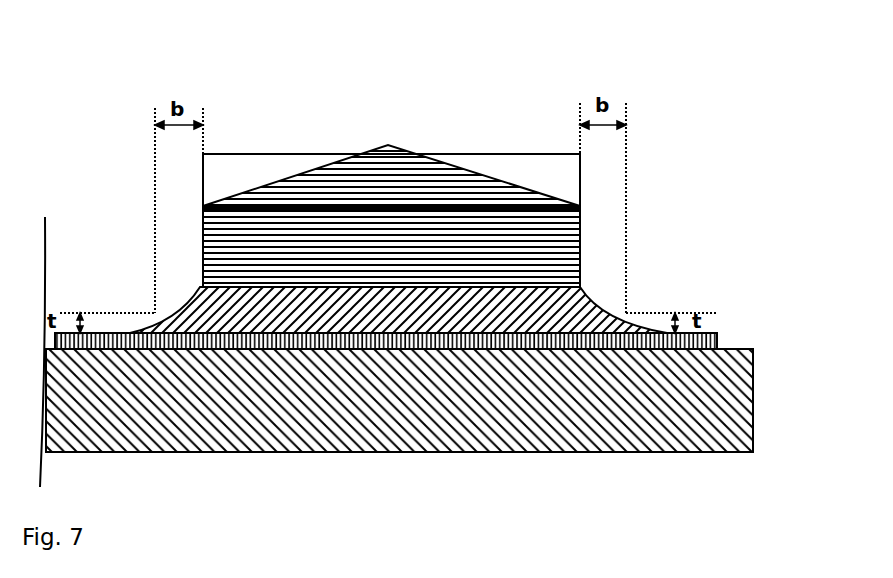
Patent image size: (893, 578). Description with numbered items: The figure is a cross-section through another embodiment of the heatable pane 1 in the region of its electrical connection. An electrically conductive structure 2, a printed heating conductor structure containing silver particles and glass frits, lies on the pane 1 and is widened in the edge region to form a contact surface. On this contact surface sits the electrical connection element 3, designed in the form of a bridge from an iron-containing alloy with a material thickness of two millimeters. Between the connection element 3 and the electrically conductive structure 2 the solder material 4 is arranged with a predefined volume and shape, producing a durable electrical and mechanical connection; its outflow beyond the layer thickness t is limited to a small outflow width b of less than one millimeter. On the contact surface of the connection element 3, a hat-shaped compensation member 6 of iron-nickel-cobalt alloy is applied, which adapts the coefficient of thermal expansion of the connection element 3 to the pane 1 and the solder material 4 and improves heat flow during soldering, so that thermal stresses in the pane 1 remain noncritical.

The pane 1 is at (723, 395).
The electrically conductive structure 2 is at (705, 338).
The electrical connection element 3 is at (548, 262).
The solder material 4 is at (610, 308).
The hat-shaped compensation member 6 is at (383, 183).